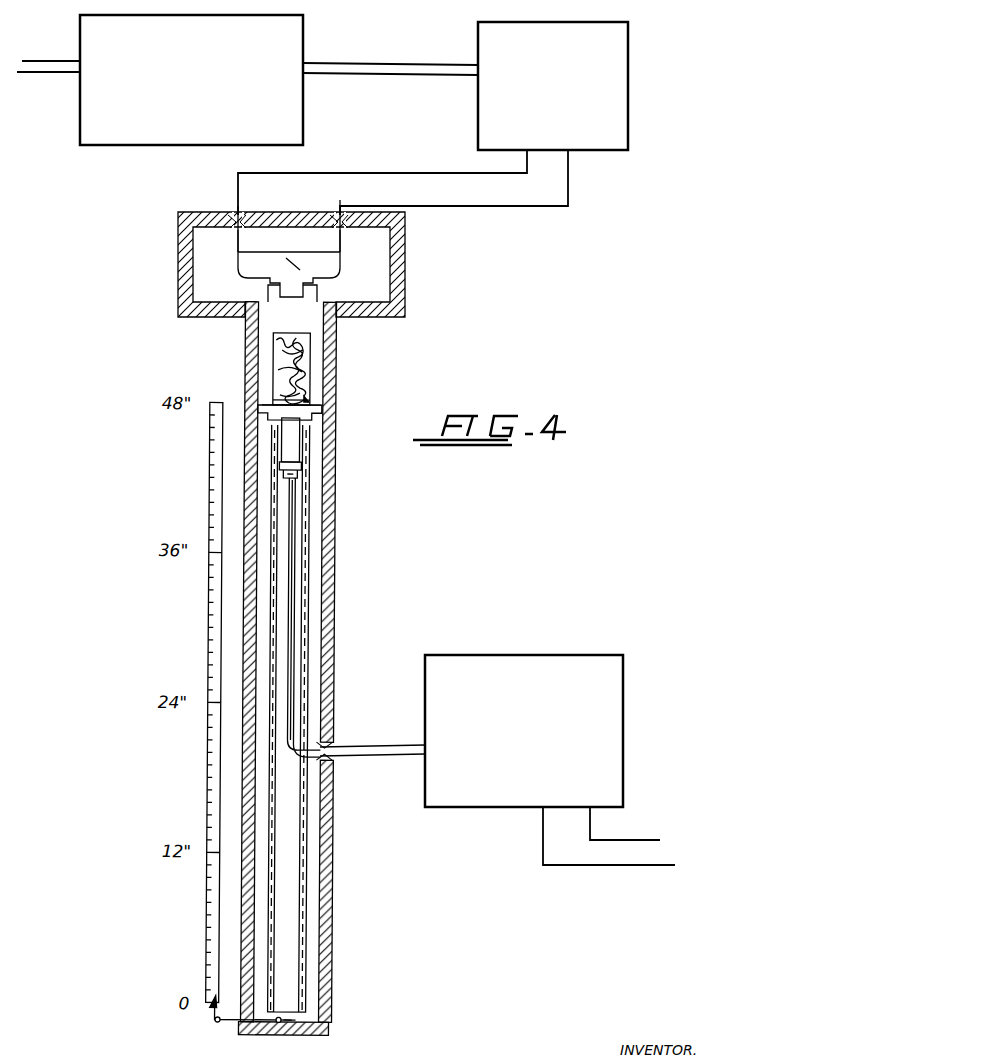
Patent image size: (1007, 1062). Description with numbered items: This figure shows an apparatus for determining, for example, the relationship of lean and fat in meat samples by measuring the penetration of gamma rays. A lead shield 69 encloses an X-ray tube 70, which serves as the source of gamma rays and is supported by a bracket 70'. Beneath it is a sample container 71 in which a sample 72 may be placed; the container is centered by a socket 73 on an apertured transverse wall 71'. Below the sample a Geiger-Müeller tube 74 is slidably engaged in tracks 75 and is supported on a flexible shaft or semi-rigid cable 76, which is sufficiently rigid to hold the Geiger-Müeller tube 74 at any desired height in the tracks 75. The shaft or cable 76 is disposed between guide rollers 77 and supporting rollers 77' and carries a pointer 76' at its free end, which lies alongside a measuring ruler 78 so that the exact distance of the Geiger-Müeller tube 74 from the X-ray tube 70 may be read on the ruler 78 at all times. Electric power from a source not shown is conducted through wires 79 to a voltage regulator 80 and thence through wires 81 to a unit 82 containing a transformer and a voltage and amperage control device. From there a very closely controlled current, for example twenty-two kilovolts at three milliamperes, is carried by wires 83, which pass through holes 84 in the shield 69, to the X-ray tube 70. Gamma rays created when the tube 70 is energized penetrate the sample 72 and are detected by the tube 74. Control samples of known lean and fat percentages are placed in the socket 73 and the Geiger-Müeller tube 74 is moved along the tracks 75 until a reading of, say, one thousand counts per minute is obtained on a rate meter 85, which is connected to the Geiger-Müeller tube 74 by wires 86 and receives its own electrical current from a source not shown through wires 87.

The lead shield 69 is at (405, 280).
The X-ray tube 70 is at (306, 274).
The bracket 70' is at (307, 296).
The sample container 71 is at (317, 373).
The lower plate 71' is at (316, 420).
The sample 72 is at (302, 380).
The socket 73 is at (310, 401).
The Geiger-Müeller tube 74 is at (300, 445).
The tracks 75 is at (272, 480).
The flexible shaft or semi-rigid cable 76 is at (327, 618).
The pointer 76' is at (191, 1017).
The guide rollers 77 is at (259, 1034).
The supporting rollers 77' is at (300, 1037).
The measuring ruler 78 is at (208, 870).
The wires 79 is at (47, 61).
The voltage regulator 80 is at (167, 145).
The wires 81 is at (362, 66).
The unit containing a transformer and a voltage and amperage control device 82 is at (618, 95).
The wires 83 is at (482, 175).
The holes 84 is at (338, 214).
The rate meter 85 is at (522, 807).
The wires 86 is at (386, 752).
The wires 87 is at (634, 840).